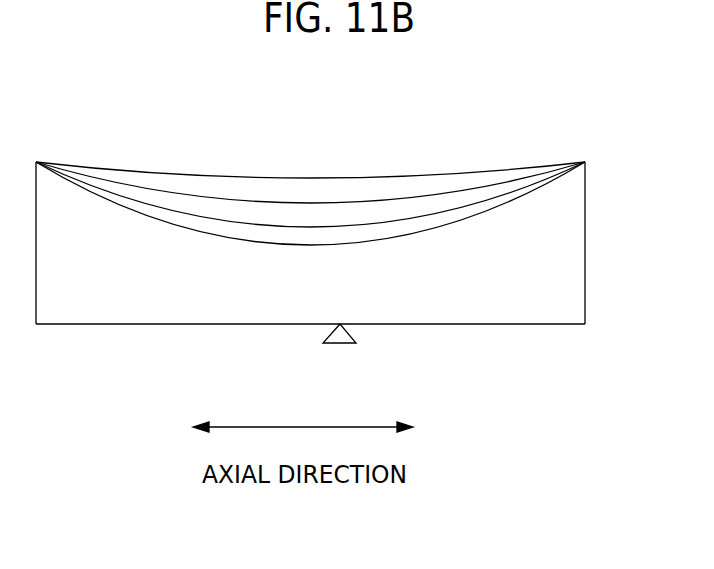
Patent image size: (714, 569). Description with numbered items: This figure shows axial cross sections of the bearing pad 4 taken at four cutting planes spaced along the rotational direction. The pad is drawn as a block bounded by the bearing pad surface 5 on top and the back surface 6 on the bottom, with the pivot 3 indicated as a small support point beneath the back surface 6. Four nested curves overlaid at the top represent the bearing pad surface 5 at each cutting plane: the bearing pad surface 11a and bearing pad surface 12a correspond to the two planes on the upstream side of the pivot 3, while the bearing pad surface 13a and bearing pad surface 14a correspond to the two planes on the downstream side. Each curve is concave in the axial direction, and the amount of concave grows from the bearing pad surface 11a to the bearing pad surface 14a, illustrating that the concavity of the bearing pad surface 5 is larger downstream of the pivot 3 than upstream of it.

The pivot 3 is at (338, 346).
The bearing pad 4 is at (602, 127).
The bearing pad surface 5 is at (310, 152).
The back surface 6 is at (475, 325).
The bearing pad surface 11a is at (221, 177).
The bearing pad surface 12a is at (279, 205).
The bearing pad surface 13a is at (353, 224).
The bearing pad surface 14a is at (418, 240).